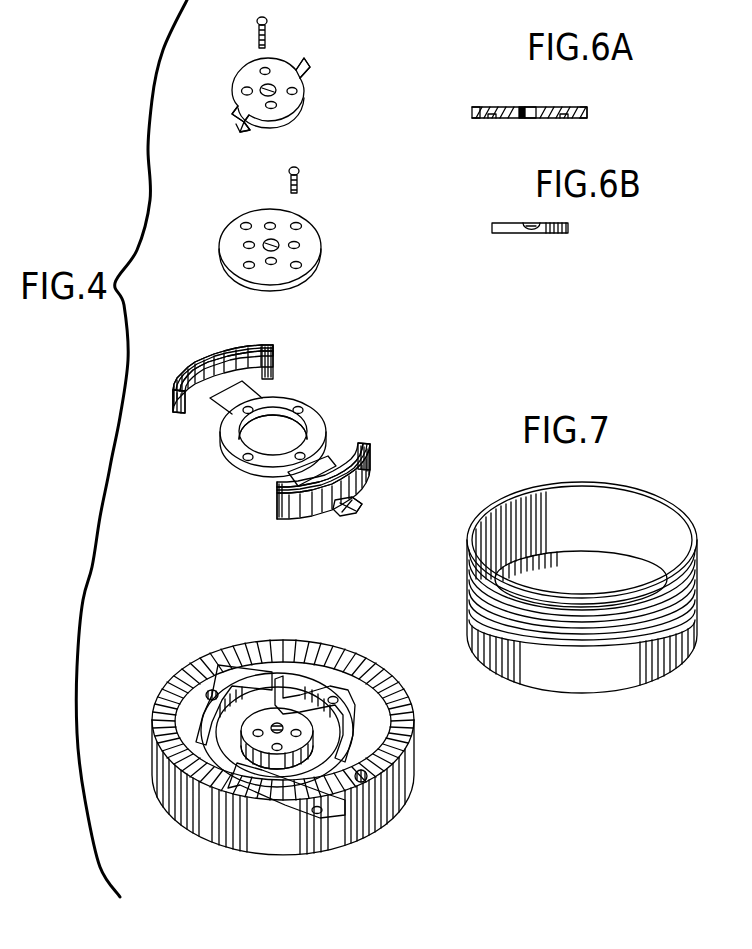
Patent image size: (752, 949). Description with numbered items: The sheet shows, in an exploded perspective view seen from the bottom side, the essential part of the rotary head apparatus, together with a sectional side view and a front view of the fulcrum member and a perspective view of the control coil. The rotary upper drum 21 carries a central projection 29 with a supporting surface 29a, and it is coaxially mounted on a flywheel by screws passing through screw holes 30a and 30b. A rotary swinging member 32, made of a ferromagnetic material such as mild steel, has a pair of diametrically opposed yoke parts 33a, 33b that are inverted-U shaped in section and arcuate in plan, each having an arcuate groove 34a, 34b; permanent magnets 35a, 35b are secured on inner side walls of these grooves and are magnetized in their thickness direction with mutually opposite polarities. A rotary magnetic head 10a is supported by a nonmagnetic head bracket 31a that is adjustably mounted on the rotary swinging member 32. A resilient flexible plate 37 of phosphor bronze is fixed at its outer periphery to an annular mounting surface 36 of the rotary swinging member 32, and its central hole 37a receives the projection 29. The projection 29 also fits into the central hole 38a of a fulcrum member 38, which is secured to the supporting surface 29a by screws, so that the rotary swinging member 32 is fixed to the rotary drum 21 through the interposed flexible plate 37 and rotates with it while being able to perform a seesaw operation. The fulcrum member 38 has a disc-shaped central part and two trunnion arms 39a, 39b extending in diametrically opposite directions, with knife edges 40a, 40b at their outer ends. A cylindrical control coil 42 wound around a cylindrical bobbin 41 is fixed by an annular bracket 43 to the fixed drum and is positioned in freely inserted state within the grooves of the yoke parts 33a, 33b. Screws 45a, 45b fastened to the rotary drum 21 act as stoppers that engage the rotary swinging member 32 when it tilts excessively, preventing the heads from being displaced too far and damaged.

In FIG. 4, the rotary magnetic head 10a is at (363, 505).
In FIG. 4, the rotary upper drum 21 is at (338, 849).
In FIG. 4, the central projection 29 is at (280, 723).
In FIG. 4, the supporting surface 29a is at (268, 754).
In FIG. 4, the screw hole 30a is at (190, 780).
In FIG. 4, the screw hole 30b is at (338, 697).
In FIG. 4, the head bracket 31a is at (343, 514).
In FIG. 4, the rotary swinging member 32 is at (214, 458).
In FIG. 4, the yoke part 33a is at (373, 462).
In FIG. 4, the yoke part 33b is at (274, 372).
In FIG. 4, the arcuate groove 34a is at (366, 444).
In FIG. 4, the arcuate groove 34b is at (222, 356).
In FIG. 4, the permanent magnet 35a is at (277, 487).
In FIG. 4, the permanent magnet 35b is at (190, 384).
In FIG. 4, the annular mounting surface 36 is at (302, 430).
In FIG. 4, the resilient flexible plate 37 is at (313, 223).
In FIG. 4, the central hole 37a is at (268, 243).
In FIG. 4, the fulcrum member 38 is at (247, 65).
In FIG. 6A, the fulcrum member 38 is at (545, 105).
In FIG. 6B, the fulcrum member 38 is at (570, 229).
In FIG. 4, the central hole 38a is at (262, 89).
In FIG. 4, the trunnion arm 39a is at (236, 111).
In FIG. 6A, the trunnion arm 39a is at (478, 108).
In FIG. 6B, the trunnion arm 39a is at (530, 223).
In FIG. 4, the trunnion arm 39b is at (301, 60).
In FIG. 6A, the trunnion arm 39b is at (585, 108).
In FIG. 4, the knife edge 40a is at (243, 130).
In FIG. 6A, the knife edge 40a is at (480, 119).
In FIG. 6B, the knife edge 40a is at (533, 234).
In FIG. 6A, the knife edge 40b is at (580, 119).
In FIG. 7, the cylindrical bobbin 41 is at (660, 512).
In FIG. 7, the control coil 42 is at (578, 656).
In FIG. 7, the annular bracket 43 is at (602, 528).
In FIG. 4, the screw 45a is at (367, 773).
In FIG. 4, the screw 45b is at (206, 694).